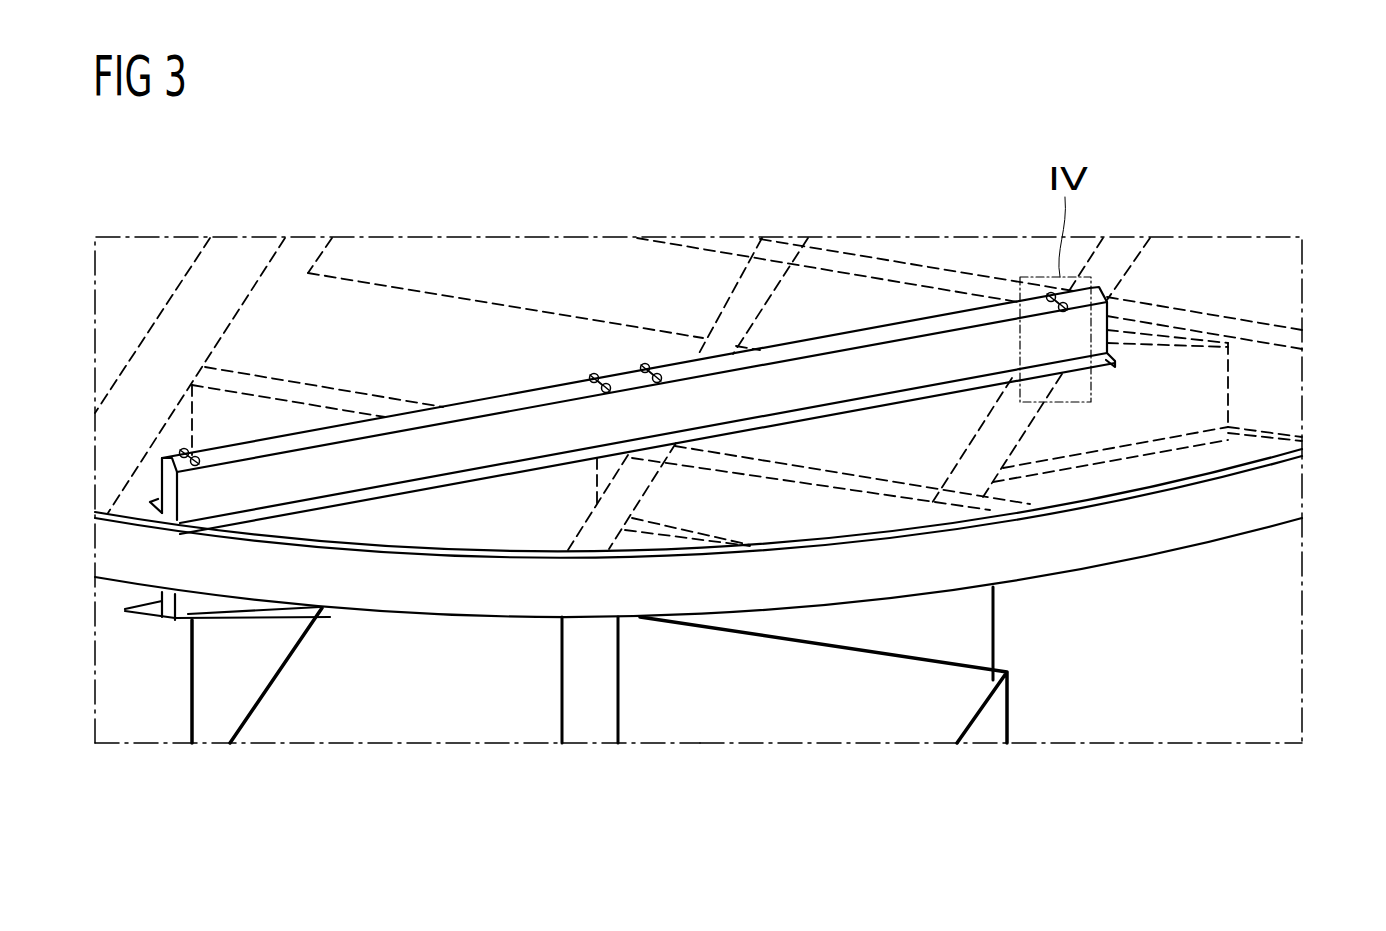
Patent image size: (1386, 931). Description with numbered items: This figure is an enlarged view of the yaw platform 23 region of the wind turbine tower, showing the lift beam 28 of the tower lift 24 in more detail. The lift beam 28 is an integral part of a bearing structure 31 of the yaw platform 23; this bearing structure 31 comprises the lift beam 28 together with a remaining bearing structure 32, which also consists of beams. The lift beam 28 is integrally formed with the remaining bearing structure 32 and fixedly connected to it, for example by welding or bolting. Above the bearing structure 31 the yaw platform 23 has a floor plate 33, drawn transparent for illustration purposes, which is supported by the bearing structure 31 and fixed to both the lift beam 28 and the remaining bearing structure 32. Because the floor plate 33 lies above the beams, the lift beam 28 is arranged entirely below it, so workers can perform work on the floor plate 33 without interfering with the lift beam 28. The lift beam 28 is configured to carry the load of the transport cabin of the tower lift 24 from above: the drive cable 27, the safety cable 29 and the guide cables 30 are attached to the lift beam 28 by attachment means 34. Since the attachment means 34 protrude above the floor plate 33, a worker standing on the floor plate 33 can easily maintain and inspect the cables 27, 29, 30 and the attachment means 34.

The yaw platform 23 is at (1193, 157).
The tower lift 24 is at (360, 730).
The drive cable 27 is at (618, 714).
The lift beam 28 is at (143, 615).
The safety cable 29 is at (562, 714).
The guide cables 30 is at (191, 715).
The bearing structure 31 is at (520, 240).
The remaining bearing structure 32 is at (233, 277).
The floor plate 33 is at (1303, 452).
The attachment means 34 is at (922, 353).